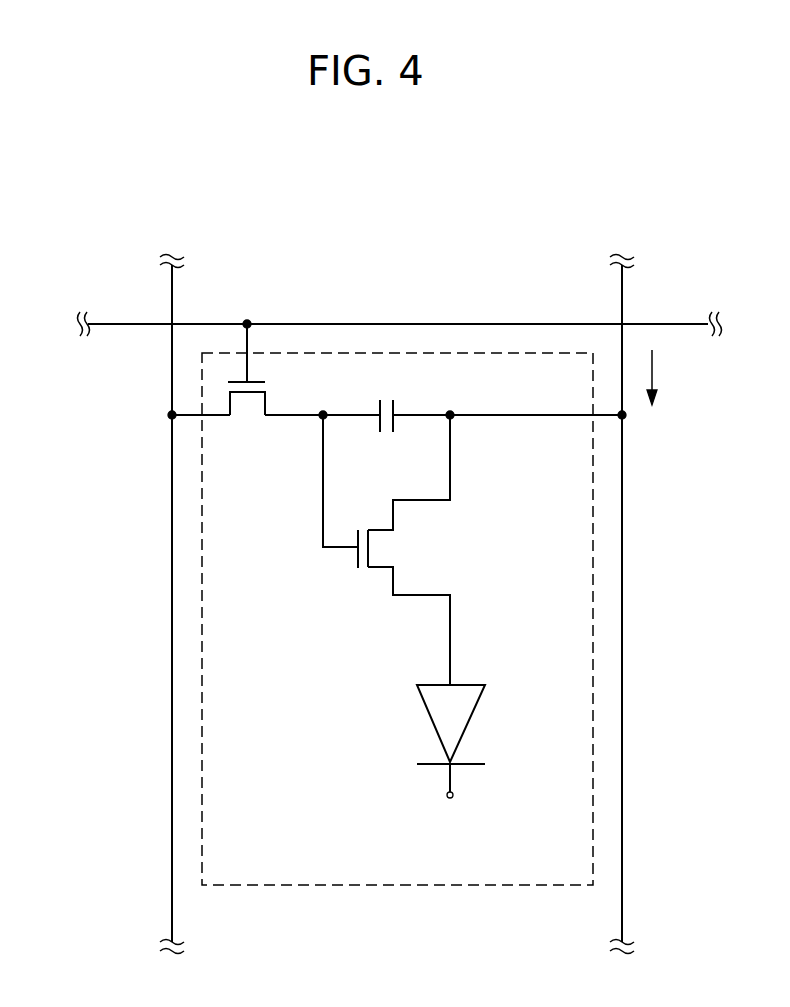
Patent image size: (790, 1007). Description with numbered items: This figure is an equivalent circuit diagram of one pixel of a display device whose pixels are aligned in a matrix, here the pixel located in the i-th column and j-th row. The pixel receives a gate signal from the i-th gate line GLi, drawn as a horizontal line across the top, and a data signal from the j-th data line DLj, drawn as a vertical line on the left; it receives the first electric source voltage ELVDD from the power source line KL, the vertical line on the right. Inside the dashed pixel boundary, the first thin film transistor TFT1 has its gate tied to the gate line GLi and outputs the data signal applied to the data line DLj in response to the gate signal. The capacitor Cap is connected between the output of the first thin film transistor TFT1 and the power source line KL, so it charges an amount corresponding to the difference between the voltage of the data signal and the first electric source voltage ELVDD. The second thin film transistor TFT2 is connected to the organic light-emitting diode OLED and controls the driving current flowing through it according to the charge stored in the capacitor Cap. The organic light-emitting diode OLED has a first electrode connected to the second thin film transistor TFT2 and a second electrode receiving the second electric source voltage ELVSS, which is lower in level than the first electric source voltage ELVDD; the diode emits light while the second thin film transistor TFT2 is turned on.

The j-th data line DLj is at (171, 592).
The i-th gate line GLi is at (376, 324).
The power source line KL is at (622, 592).
The first electric source voltage ELVDD is at (687, 377).
The first thin film transistor TFT1 is at (247, 418).
The second thin film transistor TFT2 is at (352, 568).
The capacitor Cap is at (399, 392).
The organic light-emitting diode OLED is at (432, 728).
The second electric source voltage ELVSS is at (450, 811).